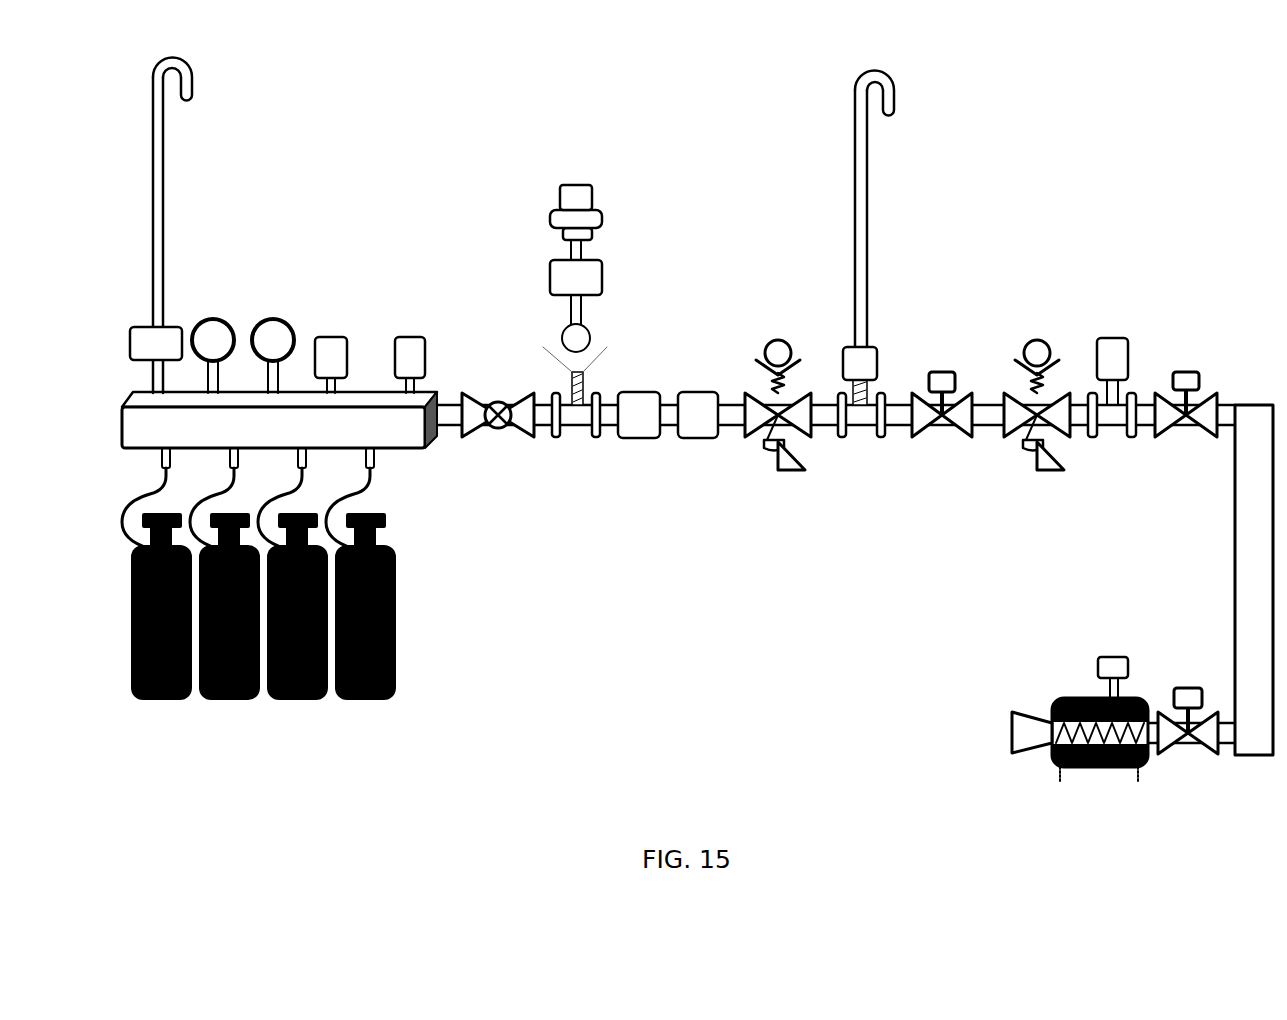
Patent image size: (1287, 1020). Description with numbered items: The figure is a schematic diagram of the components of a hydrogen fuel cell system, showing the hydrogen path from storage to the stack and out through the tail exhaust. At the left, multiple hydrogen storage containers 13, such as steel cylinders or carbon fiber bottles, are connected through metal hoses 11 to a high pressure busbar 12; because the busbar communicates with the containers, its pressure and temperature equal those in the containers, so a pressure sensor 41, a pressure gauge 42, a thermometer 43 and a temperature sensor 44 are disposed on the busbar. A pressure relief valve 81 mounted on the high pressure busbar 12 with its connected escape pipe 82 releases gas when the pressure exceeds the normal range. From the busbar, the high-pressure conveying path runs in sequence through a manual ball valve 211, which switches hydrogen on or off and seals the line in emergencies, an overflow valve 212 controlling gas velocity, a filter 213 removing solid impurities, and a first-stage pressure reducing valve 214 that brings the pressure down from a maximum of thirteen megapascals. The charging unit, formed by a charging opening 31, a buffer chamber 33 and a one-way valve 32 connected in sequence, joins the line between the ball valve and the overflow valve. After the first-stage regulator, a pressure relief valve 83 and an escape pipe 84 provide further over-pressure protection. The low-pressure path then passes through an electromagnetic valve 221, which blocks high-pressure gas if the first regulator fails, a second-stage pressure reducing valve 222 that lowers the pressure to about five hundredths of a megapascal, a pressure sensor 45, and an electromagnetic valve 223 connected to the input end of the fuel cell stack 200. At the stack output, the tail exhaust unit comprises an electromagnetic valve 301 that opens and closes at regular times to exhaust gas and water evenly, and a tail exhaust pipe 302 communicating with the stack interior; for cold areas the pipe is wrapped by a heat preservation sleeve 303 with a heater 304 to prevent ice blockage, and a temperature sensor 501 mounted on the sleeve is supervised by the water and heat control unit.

The metal hose 11 is at (370, 487).
The high pressure busbar 12 is at (279, 415).
The hydrogen storage container 13 is at (397, 595).
The charging opening 31 is at (576, 222).
The one-way valve 32 is at (575, 364).
The buffer chamber 33 is at (576, 292).
The pressure sensor 41 is at (273, 340).
The pressure gauge 42 is at (213, 340).
The thermometer 43 is at (331, 357).
The temperature sensor 44 is at (410, 357).
The pressure sensor 45 is at (1112, 371).
The pressure relief valve 81 is at (156, 343).
The escape pipe 82 is at (158, 195).
The pressure relief valve 83 is at (860, 376).
The escape pipe 84 is at (853, 288).
The fuel cell stack 200 is at (1233, 525).
The manual ball valve 211 is at (502, 420).
The overflow valve 212 is at (639, 415).
The filter 213 is at (698, 415).
The first-stage pressure reducing valve 214 is at (780, 470).
The electromagnetic valve 221 is at (943, 427).
The second-stage pressure reducing valve 222 is at (1033, 342).
The electromagnetic valve 223 is at (1187, 372).
The electromagnetic valve 301 is at (1187, 688).
The tail exhaust pipe 302 is at (1010, 727).
The heat preservation sleeve 303 is at (1060, 702).
The heater 304 is at (1058, 777).
The temperature sensor 501 is at (1100, 655).